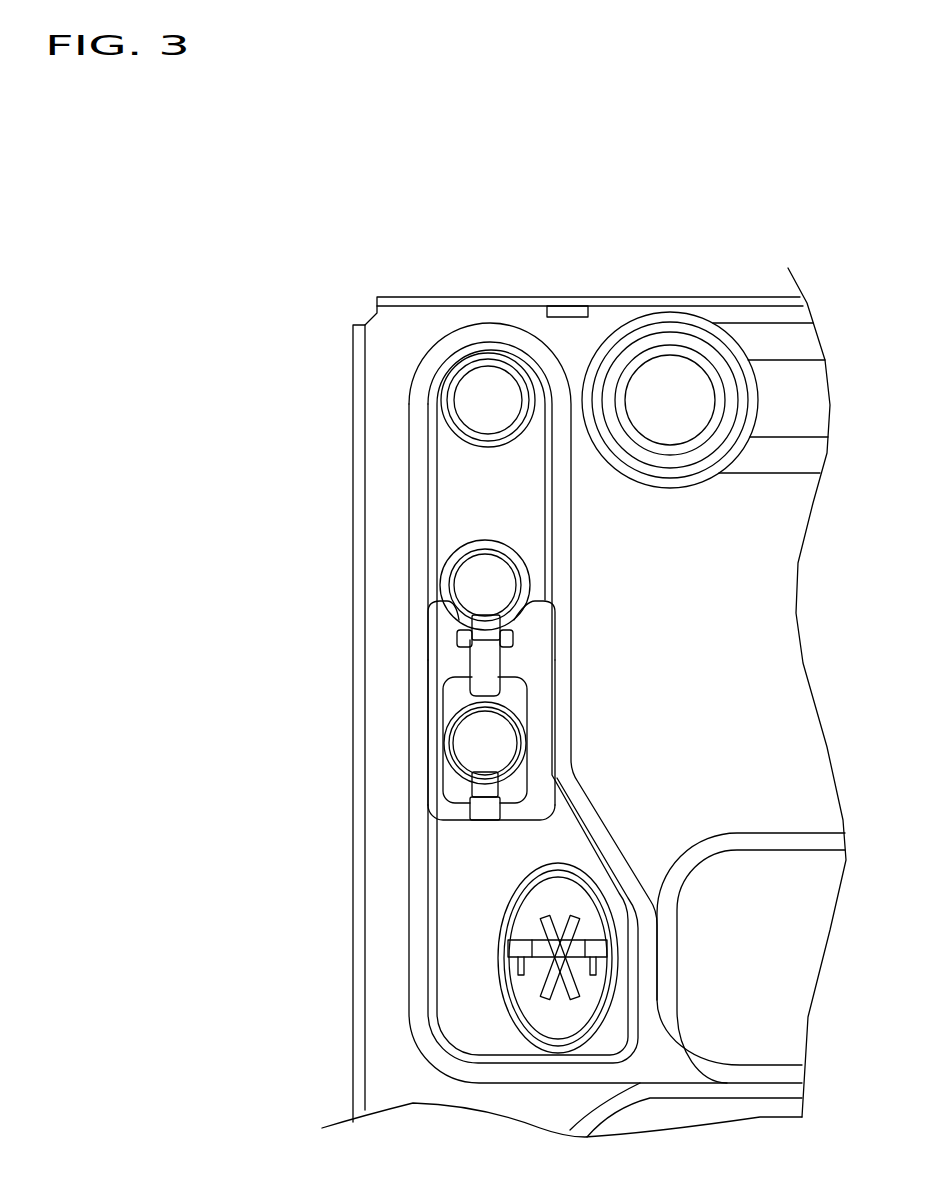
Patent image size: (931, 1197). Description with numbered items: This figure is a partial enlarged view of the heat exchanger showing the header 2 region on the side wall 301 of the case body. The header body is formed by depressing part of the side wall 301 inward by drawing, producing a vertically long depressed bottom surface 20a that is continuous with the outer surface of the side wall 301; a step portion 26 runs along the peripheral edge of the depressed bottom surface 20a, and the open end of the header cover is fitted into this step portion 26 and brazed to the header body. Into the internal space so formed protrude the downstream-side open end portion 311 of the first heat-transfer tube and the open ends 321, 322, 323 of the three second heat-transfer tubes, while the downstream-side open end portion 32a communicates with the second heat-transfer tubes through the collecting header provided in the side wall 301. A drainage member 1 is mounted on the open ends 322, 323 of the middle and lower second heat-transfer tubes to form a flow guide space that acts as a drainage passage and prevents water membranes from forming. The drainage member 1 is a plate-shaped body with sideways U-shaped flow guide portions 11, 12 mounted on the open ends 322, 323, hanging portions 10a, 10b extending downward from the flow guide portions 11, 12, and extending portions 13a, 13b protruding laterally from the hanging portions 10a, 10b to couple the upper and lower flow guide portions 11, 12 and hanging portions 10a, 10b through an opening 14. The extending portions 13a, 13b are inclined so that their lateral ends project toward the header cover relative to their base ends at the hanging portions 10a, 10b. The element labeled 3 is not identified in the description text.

The drainage member 1 is at (466, 833).
The header 2 is at (398, 977).
The case body 3 is at (353, 364).
The hanging portion 10a is at (490, 663).
The hanging portion 10b is at (490, 812).
The flow guide portion 11 is at (485, 628).
The flow guide portion 12 is at (482, 783).
The extending portion 13a is at (433, 635).
The extending portion 13b is at (543, 693).
The opening 14 is at (453, 685).
The depressed bottom surface 20a is at (452, 488).
The step portion 26 is at (517, 352).
The side wall 301 is at (750, 707).
The downstream-side open end portion 311 is at (568, 897).
The open end 321 is at (482, 388).
The open end 322 is at (462, 578).
The open end 323 is at (468, 747).
The downstream-side open end portion 32a is at (693, 363).